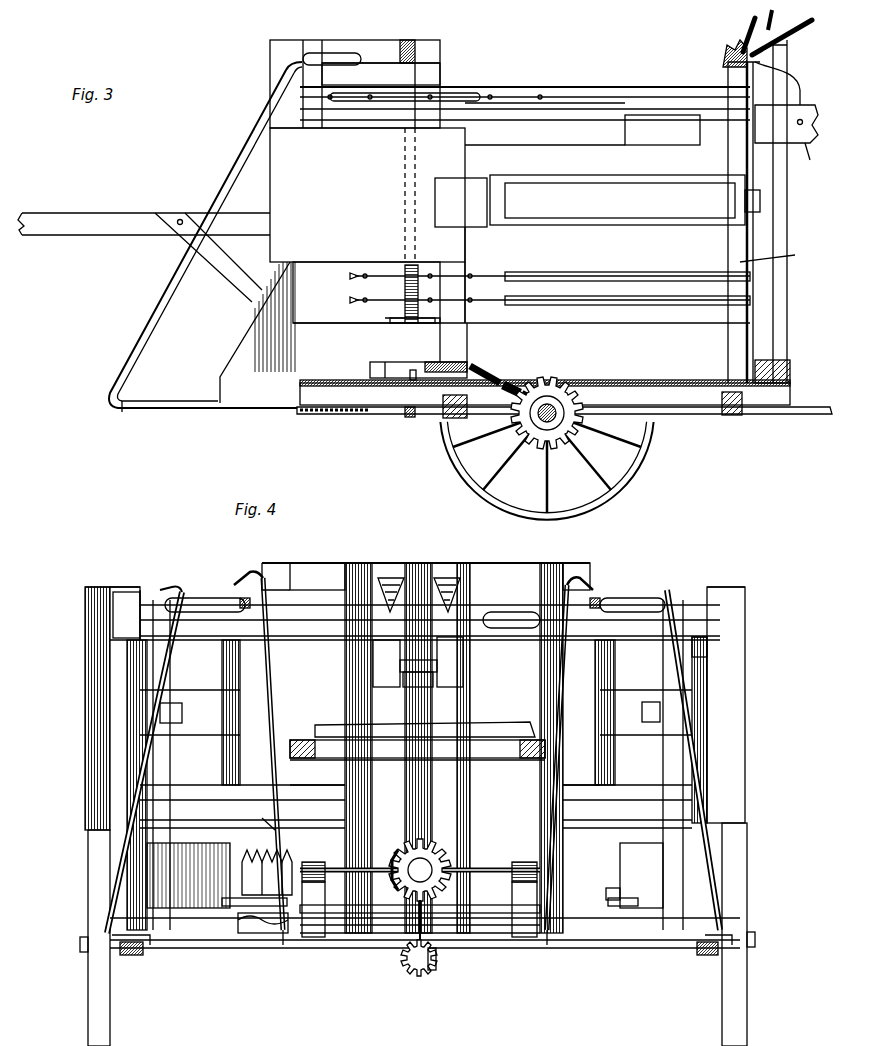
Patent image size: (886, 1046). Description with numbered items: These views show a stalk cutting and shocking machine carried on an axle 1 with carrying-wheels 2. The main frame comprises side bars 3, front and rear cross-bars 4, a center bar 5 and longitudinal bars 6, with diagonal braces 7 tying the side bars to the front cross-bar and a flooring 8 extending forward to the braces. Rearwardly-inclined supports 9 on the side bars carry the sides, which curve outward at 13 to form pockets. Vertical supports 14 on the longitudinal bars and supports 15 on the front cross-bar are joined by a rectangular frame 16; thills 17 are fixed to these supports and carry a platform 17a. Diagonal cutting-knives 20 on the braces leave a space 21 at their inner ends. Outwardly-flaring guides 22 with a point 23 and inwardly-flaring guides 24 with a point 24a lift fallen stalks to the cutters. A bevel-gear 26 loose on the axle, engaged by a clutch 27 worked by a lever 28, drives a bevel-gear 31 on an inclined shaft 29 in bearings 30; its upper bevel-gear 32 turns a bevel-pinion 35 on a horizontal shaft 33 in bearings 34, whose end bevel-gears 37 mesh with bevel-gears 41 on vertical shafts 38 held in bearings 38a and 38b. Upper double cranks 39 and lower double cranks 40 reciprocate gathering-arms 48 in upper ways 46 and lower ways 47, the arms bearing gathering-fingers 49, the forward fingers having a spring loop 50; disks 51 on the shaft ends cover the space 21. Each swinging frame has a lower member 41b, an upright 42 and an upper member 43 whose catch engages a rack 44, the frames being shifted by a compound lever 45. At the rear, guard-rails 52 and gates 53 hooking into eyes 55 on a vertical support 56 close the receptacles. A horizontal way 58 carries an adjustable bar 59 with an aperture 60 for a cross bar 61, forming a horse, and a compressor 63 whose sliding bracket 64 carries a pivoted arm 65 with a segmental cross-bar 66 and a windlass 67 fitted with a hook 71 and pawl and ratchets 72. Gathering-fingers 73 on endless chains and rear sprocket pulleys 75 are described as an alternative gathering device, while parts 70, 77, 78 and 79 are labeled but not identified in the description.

In FIG. 3, the axle 1 is at (535, 420).
In FIG. 3, the carrying-wheels 2 is at (546, 466).
In FIG. 4, the carrying-wheels 2 is at (728, 978).
In FIG. 4, the side bars 3 is at (705, 960).
In FIG. 3, the front and rear cross-bars 4 is at (728, 430).
In FIG. 4, the front and rear cross-bars 4 is at (345, 925).
In FIG. 4, the center bar 5 is at (388, 933).
In FIG. 3, the longitudinal bars 6 is at (545, 393).
In FIG. 3, the diagonal braces 7 is at (362, 413).
In FIG. 4, the diagonal braces 7 is at (222, 958).
In FIG. 3, the flooring 8 is at (529, 379).
In FIG. 4, the flooring 8 is at (320, 920).
In FIG. 4, the rearwardly-inclined supports 9 is at (131, 615).
In FIG. 4, the outwardly-curved portions of sides 13 is at (745, 690).
In FIG. 3, the vertical supports 14 is at (300, 66).
In FIG. 4, the vertical supports 14 is at (413, 578).
In FIG. 3, the vertical supports 15 is at (393, 74).
In FIG. 4, the vertical supports 15 is at (358, 748).
In FIG. 3, the rectangular frame 16 is at (355, 73).
In FIG. 4, the rectangular frame 16 is at (426, 568).
In FIG. 3, the thills 17 is at (144, 257).
In FIG. 4, the platform 17a is at (532, 722).
In FIG. 3, the diagonal cutting-knives 20 is at (325, 415).
In FIG. 3, the space 21 is at (435, 362).
In FIG. 4, the space 21 is at (625, 900).
In FIG. 4, the outwardly-flaring and downwardly-inclined guides 22 is at (760, 895).
In FIG. 4, the point 23 is at (758, 925).
In FIG. 3, the downwardly-inclined and inwardly-flaring guides 24 is at (175, 283).
In FIG. 4, the downwardly-inclined and inwardly-flaring guides 24 is at (562, 875).
In FIG. 3, the point 24a is at (120, 418).
In FIG. 4, the point 24a is at (540, 960).
In FIG. 3, the bevel-gear 26 is at (547, 463).
In FIG. 4, the bevel-gear 26 is at (417, 971).
In FIG. 4, the clutch 27 is at (315, 922).
In FIG. 4, the lever 28 is at (423, 963).
In FIG. 3, the short inclined shaft 29 is at (487, 363).
In FIG. 4, the short inclined shaft 29 is at (425, 830).
In FIG. 3, the bearings 30 is at (510, 378).
In FIG. 3, the bevel-gear 31 is at (545, 398).
In FIG. 4, the bevel-gear 32 is at (445, 832).
In FIG. 4, the horizontal shaft 33 is at (500, 870).
In FIG. 4, the bearings 34 is at (419, 909).
In FIG. 4, the bevel-pinion 35 is at (392, 857).
In FIG. 4, the bevel-gears 37 is at (565, 852).
In FIG. 3, the vertical shafts 38 is at (413, 370).
In FIG. 3, the bearings 38a is at (410, 418).
In FIG. 3, the bearings 38b is at (428, 48).
In FIG. 4, the bearings 38b is at (605, 568).
In FIG. 3, the upper double cranks 39 is at (525, 106).
In FIG. 4, the upper double cranks 39 is at (650, 582).
In FIG. 3, the lower double cranks 40 is at (395, 280).
In FIG. 3, the bevel-gears 41 is at (412, 333).
In FIG. 4, the bevel-gears 41 is at (301, 811).
In FIG. 4, the lower horizontal member 41b is at (406, 875).
In FIG. 3, the vertical upright 42 is at (777, 261).
In FIG. 3, the upper member 43 is at (590, 201).
In FIG. 4, the upper member 43 is at (410, 711).
In FIG. 3, the rack 44 is at (760, 205).
In FIG. 4, the compound lever 45 is at (455, 905).
In FIG. 3, the upper horizontal guides or ways 46 is at (525, 76).
In FIG. 4, the upper horizontal guides or ways 46 is at (430, 681).
In FIG. 3, the lower horizontal guides or ways 47 is at (590, 310).
In FIG. 4, the lower horizontal guides or ways 47 is at (416, 831).
In FIG. 3, the reciprocating gathering-arms 48 is at (525, 198).
In FIG. 4, the reciprocating gathering-arms 48 is at (522, 602).
In FIG. 3, the gathering-fingers 49 is at (395, 262).
In FIG. 4, the gathering-fingers 49 is at (640, 800).
In FIG. 3, the loop 50 is at (377, 361).
In FIG. 3, the disks 51 is at (372, 362).
In FIG. 4, the disks 51 is at (631, 885).
In FIG. 3, the guard-rails 52 is at (789, 365).
In FIG. 4, the outwardly-curved gates 53 is at (452, 660).
In FIG. 4, the eyes 55 is at (404, 679).
In FIG. 4, the vertical support 56 is at (410, 803).
In FIG. 3, the horizontal way or guide 58 is at (545, 133).
In FIG. 3, the adjustable bar 59 is at (786, 124).
In FIG. 3, the aperture 60 is at (802, 118).
In FIG. 3, the cross arm or bar 61 is at (809, 156).
In FIG. 3, the adjustable compressor 63 is at (743, 24).
In FIG. 3, the sliding bracket 64 is at (662, 130).
In FIG. 3, the arm 65 is at (798, 68).
In FIG. 3, the curved or segmental cross-bar 66 is at (788, 27).
In FIG. 4, the curved or segmental cross-bar 66 is at (408, 657).
In FIG. 4, the windlass or drum 67 is at (420, 590).
In FIG. 3, the post 70 is at (787, 333).
In FIG. 4, the hook 71 is at (705, 592).
In FIG. 3, the pawl and ratchets 72 is at (720, 42).
In FIG. 4, the pawl and ratchets 72 is at (480, 575).
In FIG. 4, the gathering-fingers 73 is at (98, 816).
In FIG. 4, the sprocket wheels or pulleys 75 is at (551, 748).
In FIG. 3, the panel 77 is at (521, 275).
In FIG. 4, the panel 77 is at (525, 752).
In FIG. 3, the panel 78 is at (246, 332).
In FIG. 4, the panel 78 is at (445, 808).
In FIG. 3, the body block 79 is at (368, 245).
In FIG. 4, the body block 79 is at (598, 760).